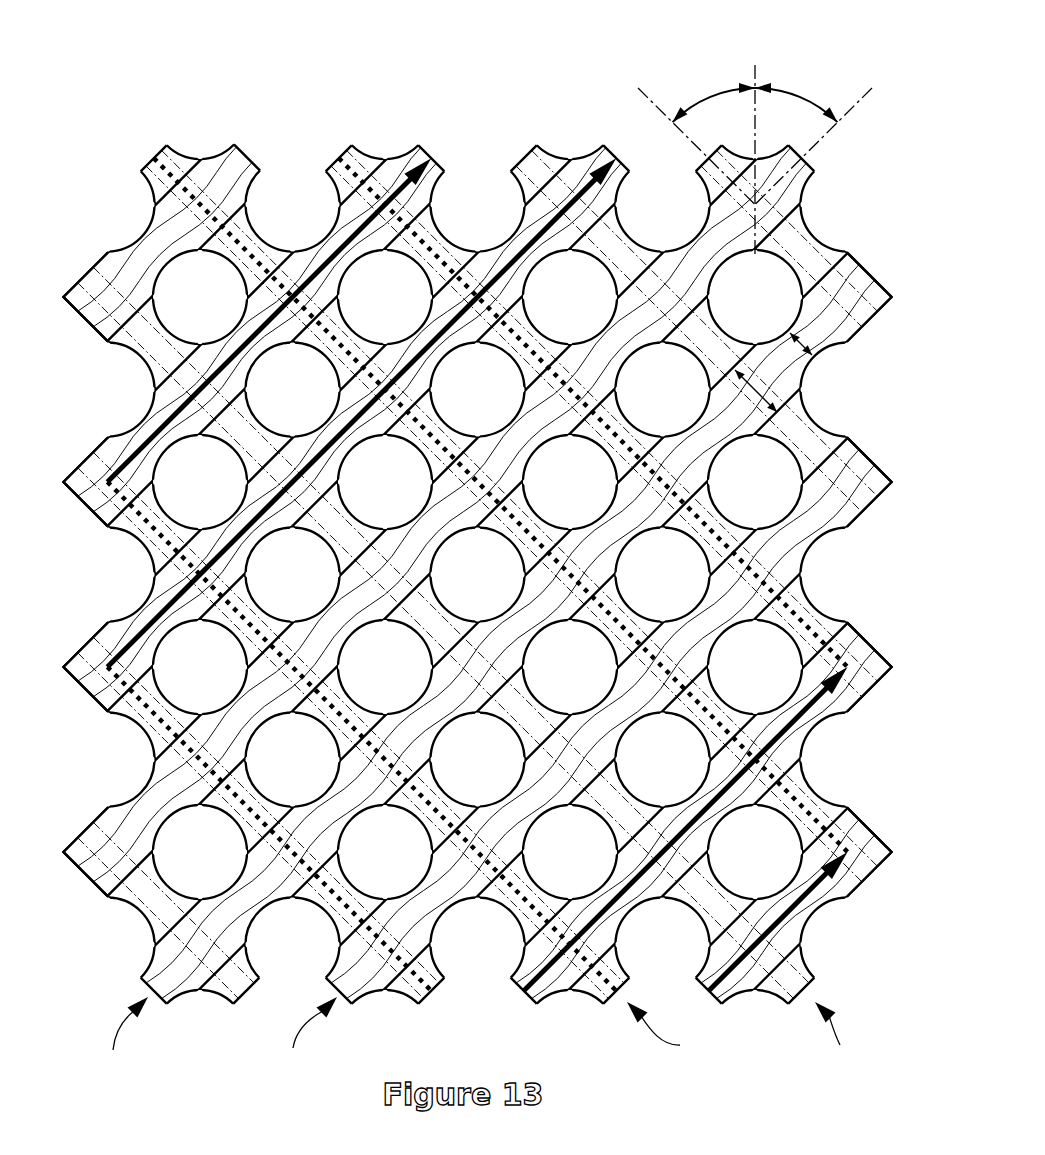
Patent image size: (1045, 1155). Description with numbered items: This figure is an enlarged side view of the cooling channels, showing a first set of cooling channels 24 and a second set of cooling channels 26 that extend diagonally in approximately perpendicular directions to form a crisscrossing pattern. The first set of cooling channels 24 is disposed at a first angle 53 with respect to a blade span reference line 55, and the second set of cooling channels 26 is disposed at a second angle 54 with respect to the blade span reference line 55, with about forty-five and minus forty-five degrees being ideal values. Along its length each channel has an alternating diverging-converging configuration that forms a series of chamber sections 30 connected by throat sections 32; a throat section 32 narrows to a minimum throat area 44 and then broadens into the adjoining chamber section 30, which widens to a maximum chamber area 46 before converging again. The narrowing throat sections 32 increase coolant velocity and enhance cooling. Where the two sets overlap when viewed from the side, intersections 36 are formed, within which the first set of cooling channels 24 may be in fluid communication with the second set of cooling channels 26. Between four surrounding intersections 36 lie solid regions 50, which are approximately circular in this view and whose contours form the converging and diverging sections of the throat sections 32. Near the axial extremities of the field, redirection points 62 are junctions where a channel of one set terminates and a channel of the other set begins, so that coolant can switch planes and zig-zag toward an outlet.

The first set of cooling channels 24 is at (359, 614).
The second set of cooling channels 26 is at (488, 615).
The chamber sections 30 is at (667, 292).
The throat sections 32 is at (712, 250).
The intersections 36 is at (213, 198).
The minimum throat area 44 is at (810, 343).
The maximum chamber area 46 is at (797, 382).
The solid regions 50 is at (370, 312).
The first angle 53 is at (803, 90).
The second angle 54 is at (712, 93).
The blade span reference line 55 is at (758, 72).
The redirection points 62 is at (103, 305).